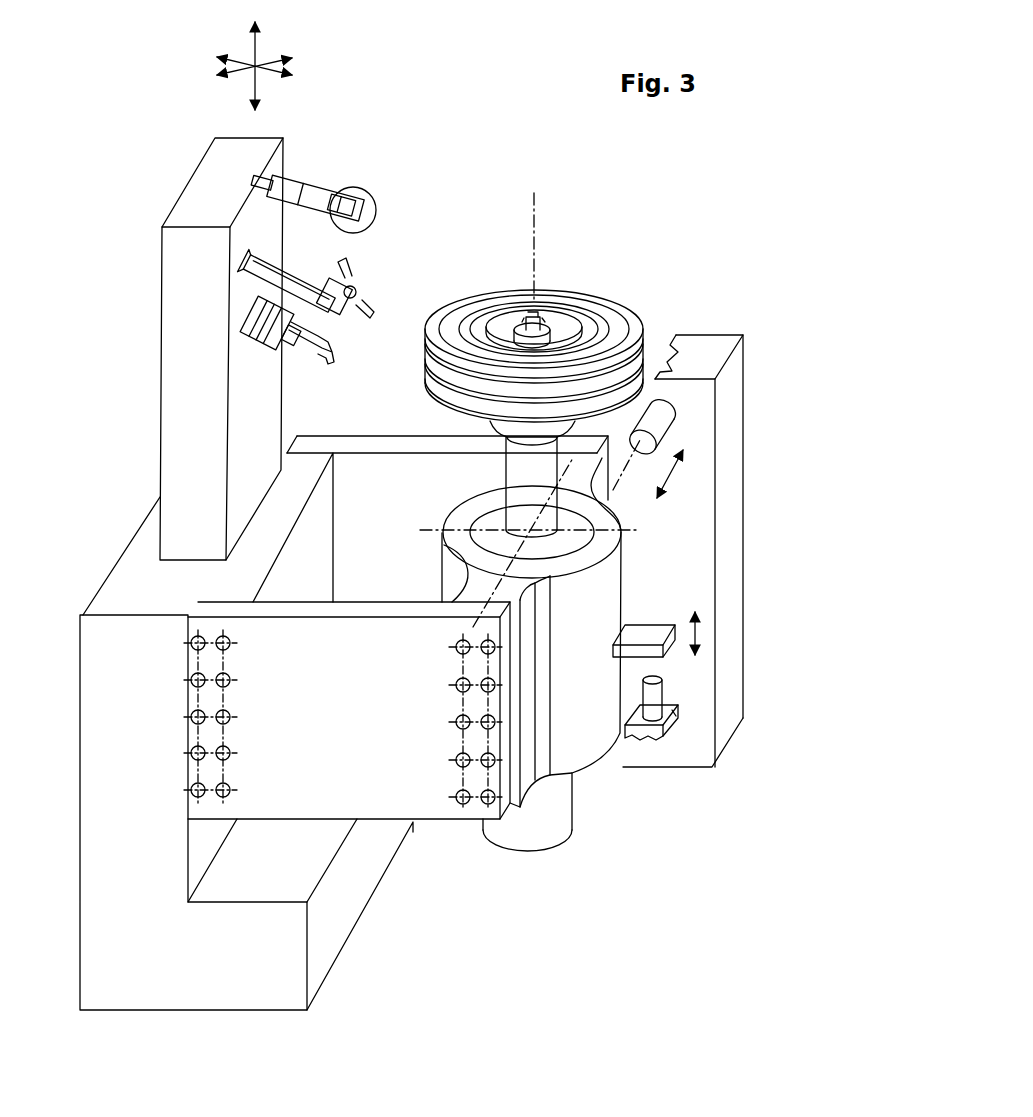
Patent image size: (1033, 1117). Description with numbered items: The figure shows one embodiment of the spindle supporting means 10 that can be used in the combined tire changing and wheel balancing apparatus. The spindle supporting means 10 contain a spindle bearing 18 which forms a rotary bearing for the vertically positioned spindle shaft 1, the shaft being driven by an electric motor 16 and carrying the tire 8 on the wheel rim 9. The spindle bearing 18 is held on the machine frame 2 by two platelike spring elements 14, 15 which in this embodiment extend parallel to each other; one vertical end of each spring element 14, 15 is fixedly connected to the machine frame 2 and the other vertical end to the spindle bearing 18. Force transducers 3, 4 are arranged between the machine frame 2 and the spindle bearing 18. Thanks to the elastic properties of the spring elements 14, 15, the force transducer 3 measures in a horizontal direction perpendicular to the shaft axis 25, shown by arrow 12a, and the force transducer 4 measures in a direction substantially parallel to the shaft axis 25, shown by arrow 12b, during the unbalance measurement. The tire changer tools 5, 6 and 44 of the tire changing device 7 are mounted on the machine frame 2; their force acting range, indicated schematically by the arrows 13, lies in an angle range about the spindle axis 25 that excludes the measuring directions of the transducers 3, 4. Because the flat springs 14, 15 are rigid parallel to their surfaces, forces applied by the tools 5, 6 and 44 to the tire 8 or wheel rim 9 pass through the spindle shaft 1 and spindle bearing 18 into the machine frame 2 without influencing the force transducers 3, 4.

The spindle shaft 1 is at (517, 472).
The machine frame 2 is at (188, 385).
The force transducer 3 is at (658, 425).
The force transducer 4 is at (658, 695).
The tire changer tool 5 is at (302, 342).
The tire changer tool 6 is at (355, 287).
The tire changing device 7 is at (358, 96).
The tire 8 is at (620, 317).
The wheel rim 9 is at (565, 320).
The spindle supporting means 10 is at (560, 868).
The arrow 12a is at (672, 478).
The arrow 12b is at (695, 630).
The arrows 13 is at (258, 53).
The platelike spring element 14 is at (430, 800).
The platelike spring element 15 is at (380, 468).
The electric motor 16 is at (510, 843).
The spindle bearing 18 is at (585, 743).
The shaft axis 25 is at (534, 262).
The tire changer tool 44 is at (358, 188).